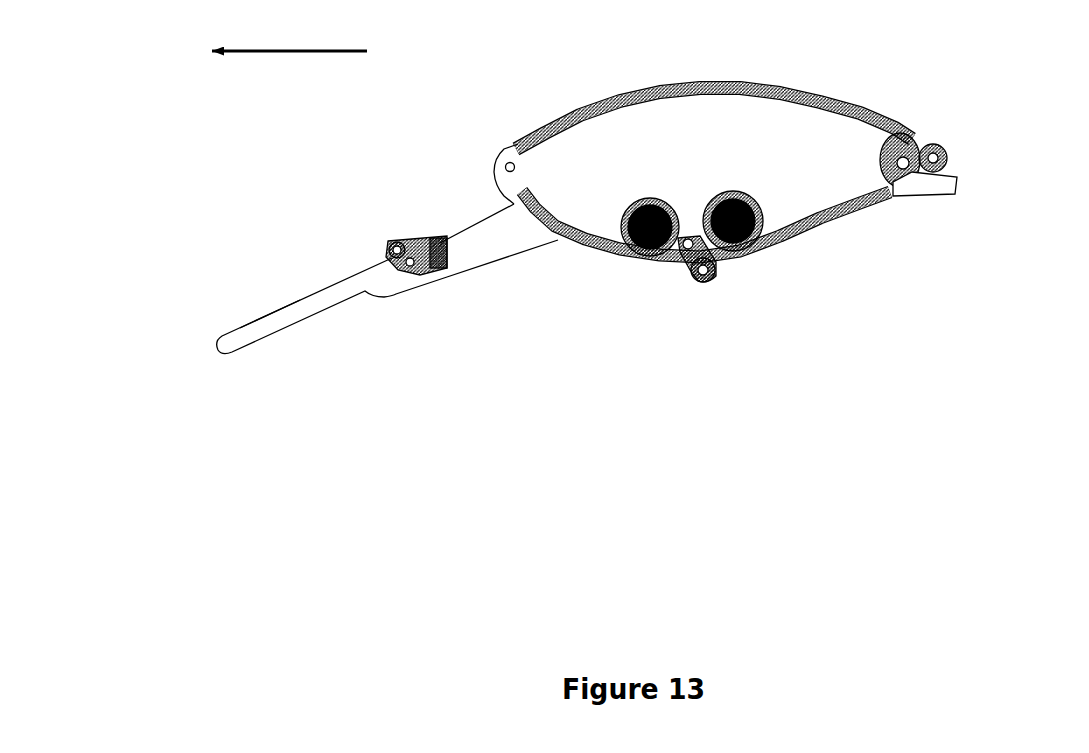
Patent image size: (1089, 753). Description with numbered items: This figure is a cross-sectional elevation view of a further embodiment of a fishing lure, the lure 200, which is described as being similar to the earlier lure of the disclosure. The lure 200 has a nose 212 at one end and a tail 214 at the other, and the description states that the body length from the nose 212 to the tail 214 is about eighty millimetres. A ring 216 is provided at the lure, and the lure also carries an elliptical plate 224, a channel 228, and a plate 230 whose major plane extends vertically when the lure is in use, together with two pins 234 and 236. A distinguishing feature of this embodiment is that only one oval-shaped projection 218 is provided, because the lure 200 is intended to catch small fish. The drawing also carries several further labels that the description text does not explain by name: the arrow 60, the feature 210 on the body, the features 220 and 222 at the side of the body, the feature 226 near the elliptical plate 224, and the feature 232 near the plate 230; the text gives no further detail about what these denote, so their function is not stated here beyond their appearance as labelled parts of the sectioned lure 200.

The forward direction arrow 60 is at (314, 53).
The lure 200 is at (553, 227).
The lure body 210 is at (688, 82).
The nose 212 is at (495, 148).
The tail 214 is at (915, 128).
The ring 216 is at (958, 150).
The oval-shaped projection 218 is at (697, 282).
The right eye 220 is at (770, 212).
The left eye 222 is at (622, 238).
The elliptical plate 224 is at (305, 330).
The rod tip 226 is at (282, 308).
The channel 228 is at (450, 255).
The plate 230 is at (398, 235).
The clasp ring 232 is at (388, 250).
The pin 234 is at (438, 236).
The pin 236 is at (412, 268).